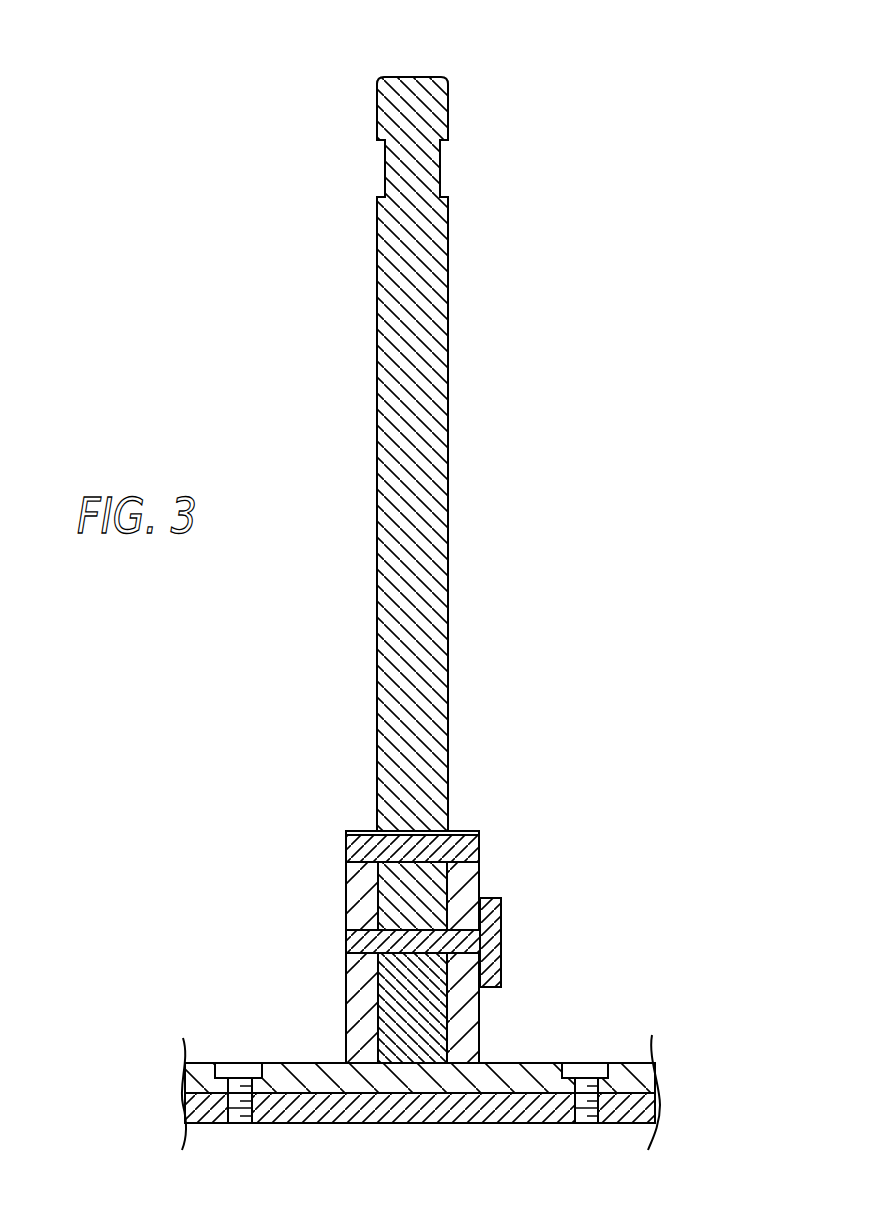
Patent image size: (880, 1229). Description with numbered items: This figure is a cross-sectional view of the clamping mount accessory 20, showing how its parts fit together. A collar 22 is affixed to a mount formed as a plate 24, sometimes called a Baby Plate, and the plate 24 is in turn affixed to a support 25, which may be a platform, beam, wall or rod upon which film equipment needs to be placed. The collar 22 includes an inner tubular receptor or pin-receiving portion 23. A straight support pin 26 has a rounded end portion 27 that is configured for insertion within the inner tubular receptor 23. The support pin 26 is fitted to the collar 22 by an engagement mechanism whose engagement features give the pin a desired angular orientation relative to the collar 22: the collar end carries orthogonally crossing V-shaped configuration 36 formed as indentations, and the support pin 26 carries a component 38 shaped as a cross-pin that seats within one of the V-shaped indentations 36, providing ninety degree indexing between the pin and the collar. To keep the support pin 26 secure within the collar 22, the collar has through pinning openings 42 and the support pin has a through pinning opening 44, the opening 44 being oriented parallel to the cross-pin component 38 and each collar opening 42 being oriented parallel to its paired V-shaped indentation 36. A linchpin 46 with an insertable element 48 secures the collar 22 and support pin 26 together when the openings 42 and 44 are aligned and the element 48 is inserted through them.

The clamping mount accessory 20 is at (642, 444).
The support pin 26 is at (440, 350).
The V-shaped configuration 36 is at (365, 858).
The component shaped as a cross-pin 38 is at (466, 848).
The collar 22 is at (340, 905).
The inner tubular receptor 23 is at (446, 884).
The linchpin 46 is at (518, 908).
The through pinning opening of the collar 42 is at (366, 934).
The rounded end portion 27 is at (425, 1018).
The through pinning opening of the support pin 44 is at (393, 945).
The insertable element 48 is at (405, 948).
The plate 24 is at (615, 1063).
The support 25 is at (460, 1123).